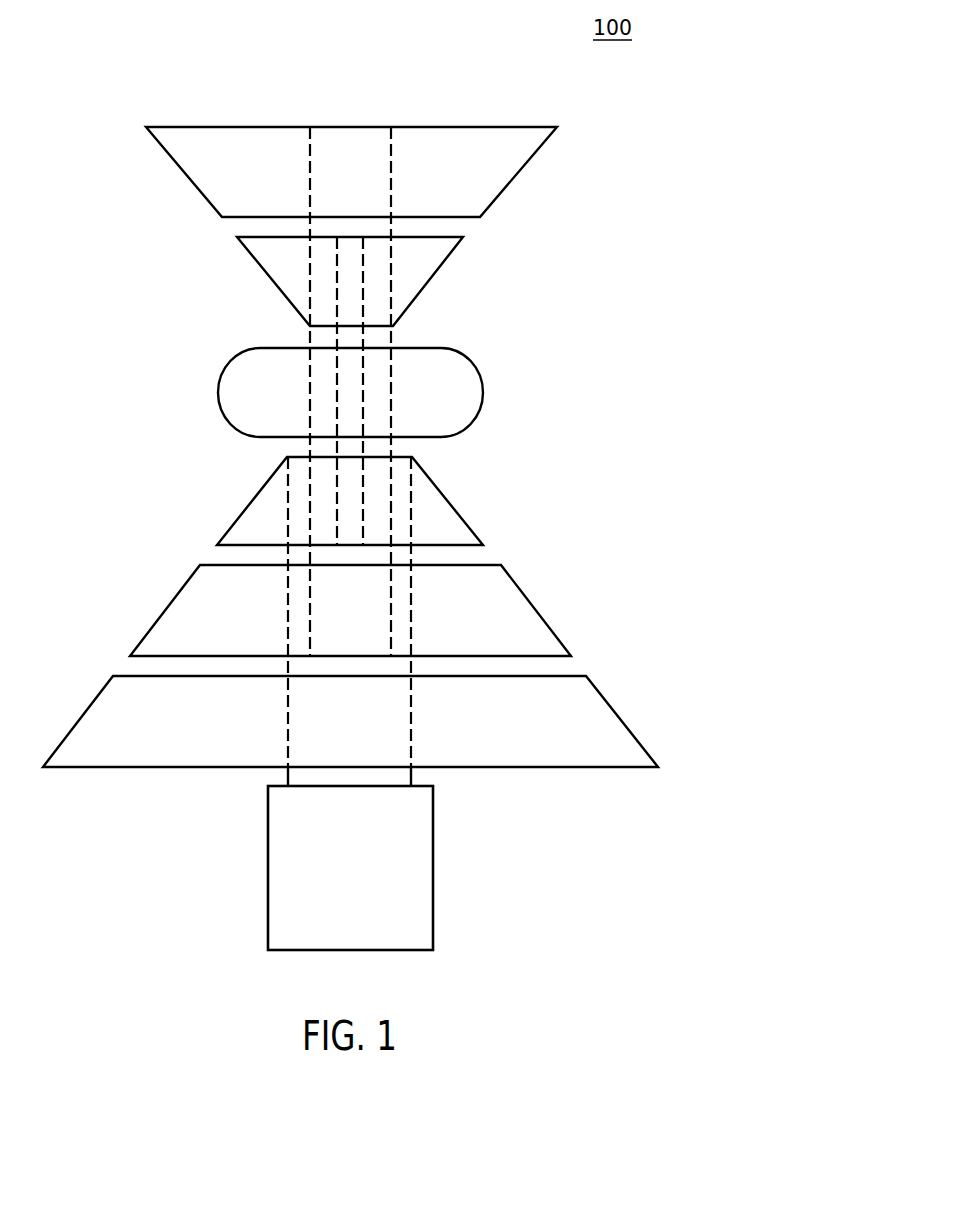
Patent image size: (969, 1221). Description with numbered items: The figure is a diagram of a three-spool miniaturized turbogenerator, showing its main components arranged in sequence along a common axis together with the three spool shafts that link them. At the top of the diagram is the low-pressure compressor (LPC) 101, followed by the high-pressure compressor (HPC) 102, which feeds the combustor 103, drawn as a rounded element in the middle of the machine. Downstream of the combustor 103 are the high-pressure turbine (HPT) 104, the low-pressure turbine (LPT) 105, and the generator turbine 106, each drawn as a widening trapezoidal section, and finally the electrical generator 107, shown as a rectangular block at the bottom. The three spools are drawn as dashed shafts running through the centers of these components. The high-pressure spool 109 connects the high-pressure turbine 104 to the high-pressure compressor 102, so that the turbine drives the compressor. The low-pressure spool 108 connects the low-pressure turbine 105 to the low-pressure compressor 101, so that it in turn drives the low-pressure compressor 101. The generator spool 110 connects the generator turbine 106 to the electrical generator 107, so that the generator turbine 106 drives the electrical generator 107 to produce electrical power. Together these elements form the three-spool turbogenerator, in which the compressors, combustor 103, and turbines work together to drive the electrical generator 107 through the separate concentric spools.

The low-pressure compressor 101 is at (522, 170).
The high-pressure compressor 102 is at (425, 283).
The combustor 103 is at (482, 390).
The high-pressure turbine 104 is at (452, 503).
The low-pressure turbine 105 is at (532, 603).
The generator turbine 106 is at (618, 713).
The electrical generator 107 is at (433, 867).
The low-pressure spool 108 is at (350, 339).
The high-pressure spool 109 is at (323, 447).
The generator spool 110 is at (295, 558).